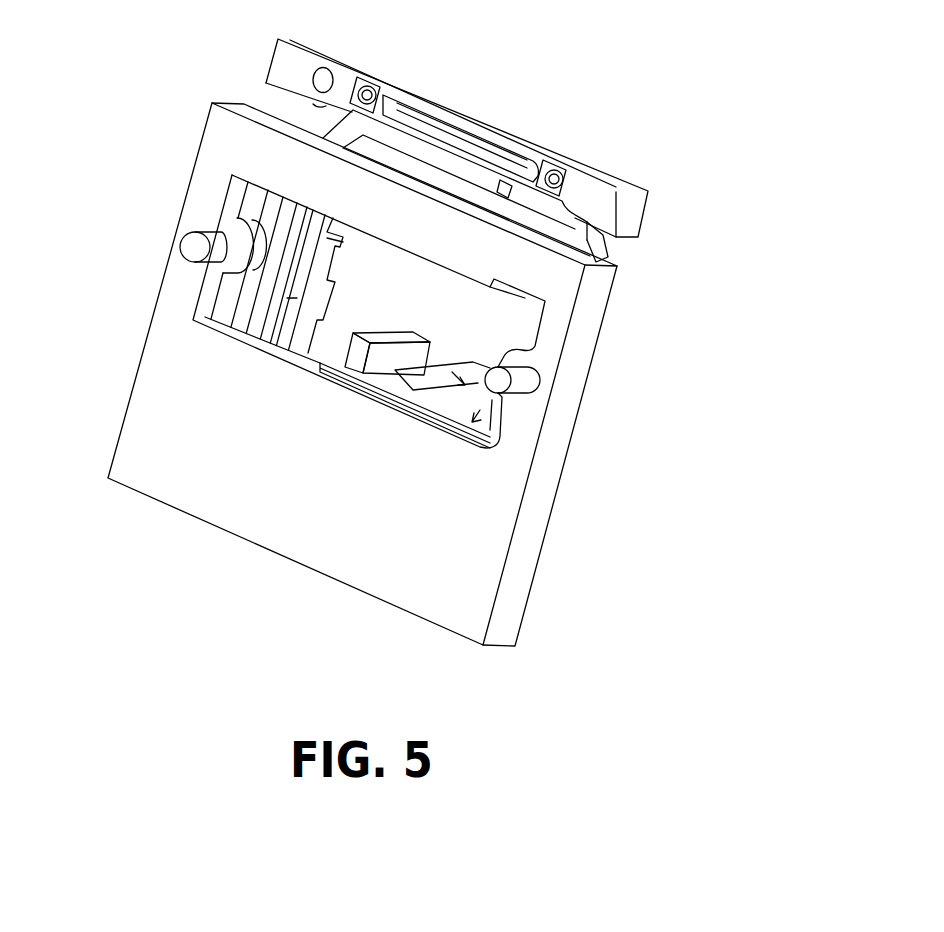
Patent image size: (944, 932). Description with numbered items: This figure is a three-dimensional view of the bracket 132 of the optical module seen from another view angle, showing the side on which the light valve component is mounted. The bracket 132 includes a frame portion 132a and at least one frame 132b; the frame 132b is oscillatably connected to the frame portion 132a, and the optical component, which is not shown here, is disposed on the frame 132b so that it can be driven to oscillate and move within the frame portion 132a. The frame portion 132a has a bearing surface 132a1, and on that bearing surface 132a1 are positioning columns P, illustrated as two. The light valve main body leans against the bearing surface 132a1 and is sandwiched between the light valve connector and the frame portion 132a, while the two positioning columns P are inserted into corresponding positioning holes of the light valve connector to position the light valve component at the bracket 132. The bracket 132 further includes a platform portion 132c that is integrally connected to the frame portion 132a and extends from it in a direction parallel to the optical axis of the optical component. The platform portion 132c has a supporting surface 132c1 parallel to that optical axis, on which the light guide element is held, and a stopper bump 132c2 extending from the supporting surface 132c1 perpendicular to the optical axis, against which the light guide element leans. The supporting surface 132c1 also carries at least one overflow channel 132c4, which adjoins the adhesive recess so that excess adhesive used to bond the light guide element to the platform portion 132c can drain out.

The bracket 132 is at (652, 101).
The frame portion 132a is at (344, 342).
The bearing surface 132a1 is at (180, 373).
The frame 132b is at (322, 268).
The platform portion 132c is at (408, 359).
The supporting surface 132c1 is at (480, 370).
The stopper bump 132c2 is at (383, 357).
The overflow channel 132c4 is at (480, 393).
The positioning column P is at (207, 233).